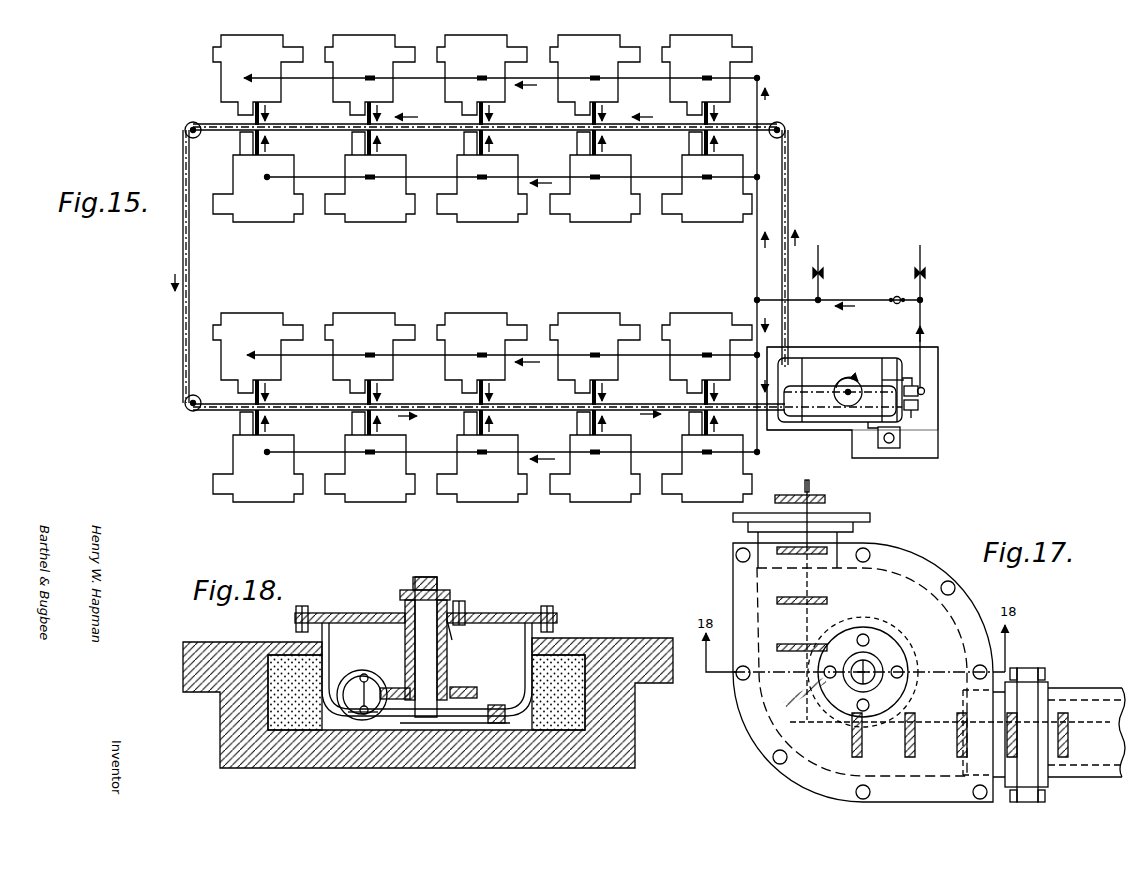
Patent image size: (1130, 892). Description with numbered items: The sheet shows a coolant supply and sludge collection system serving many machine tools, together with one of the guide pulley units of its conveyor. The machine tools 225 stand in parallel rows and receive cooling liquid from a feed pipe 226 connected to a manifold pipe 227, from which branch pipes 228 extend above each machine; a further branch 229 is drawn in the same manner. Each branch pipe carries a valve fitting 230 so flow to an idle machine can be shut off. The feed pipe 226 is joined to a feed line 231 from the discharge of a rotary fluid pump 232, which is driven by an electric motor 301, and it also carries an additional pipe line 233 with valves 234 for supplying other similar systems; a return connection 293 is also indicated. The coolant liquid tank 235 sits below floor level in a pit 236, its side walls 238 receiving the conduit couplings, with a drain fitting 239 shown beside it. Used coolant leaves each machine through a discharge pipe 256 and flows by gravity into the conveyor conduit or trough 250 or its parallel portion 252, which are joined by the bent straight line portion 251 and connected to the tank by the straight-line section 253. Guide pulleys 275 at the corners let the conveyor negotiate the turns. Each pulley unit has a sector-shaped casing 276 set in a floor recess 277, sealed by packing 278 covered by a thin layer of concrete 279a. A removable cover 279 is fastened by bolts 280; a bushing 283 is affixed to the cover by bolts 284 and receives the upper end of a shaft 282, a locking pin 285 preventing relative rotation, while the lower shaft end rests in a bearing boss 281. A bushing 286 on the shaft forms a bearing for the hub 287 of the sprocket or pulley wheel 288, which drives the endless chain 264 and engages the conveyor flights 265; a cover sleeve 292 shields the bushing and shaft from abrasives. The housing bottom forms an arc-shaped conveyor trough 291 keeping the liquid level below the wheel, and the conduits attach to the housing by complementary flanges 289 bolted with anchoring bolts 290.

In FIG. 15, the machine tool 225 is at (211, 78).
In FIG. 15, the valve fitting 230 is at (372, 78).
In FIG. 15, the branch pipe 228 is at (645, 80).
In FIG. 15, the drive shaft 229 is at (658, 451).
In FIG. 15, the discharge pipe 256 is at (590, 118).
In FIG. 15, the straight line portion of conveyor conduit 252 is at (318, 131).
In FIG. 15, the conveyor conduit or trough 250 is at (541, 412).
In FIG. 17, the conveyor conduit or trough 250 is at (1088, 688).
In FIG. 15, the straight line portion of conveyor conduit 251 is at (182, 336).
In FIG. 15, the straight-line section 253 is at (789, 186).
In FIG. 15, the guide pulley 275 is at (182, 130).
In FIG. 17, the guide pulley 275 is at (761, 755).
In FIG. 15, the manifold pipe 227 is at (757, 262).
In FIG. 15, the feed pipe 226 is at (875, 299).
In FIG. 15, the additional pipe line 233 is at (818, 252).
In FIG. 15, the valve 234 is at (824, 273).
In FIG. 15, the coolant liquid tank 235 is at (926, 276).
In FIG. 15, the pit 236 is at (938, 442).
In FIG. 15, the feed line 231 is at (938, 363).
In FIG. 15, the side wall of coolant tank 238 is at (843, 358).
In FIG. 18, the side wall of coolant tank 238 is at (645, 640).
In FIG. 15, the drain 239 is at (864, 428).
In FIG. 15, the rotary fluid pump 232 is at (930, 396).
In FIG. 15, the electric motor 301 is at (921, 423).
In FIG. 15, the return line 293 is at (918, 362).
In FIG. 18, the pit lining 278 is at (286, 650).
In FIG. 18, the floor recess 277 is at (592, 660).
In FIG. 18, the sector-shaped casing 276 is at (526, 645).
In FIG. 18, the layer of concrete 279a is at (356, 612).
In FIG. 18, the removable cover 279 is at (567, 637).
In FIG. 17, the removable cover 279 is at (921, 562).
In FIG. 18, the bolt 280 is at (304, 606).
In FIG. 17, the bolt 280 is at (740, 680).
In FIG. 18, the bolt 284 is at (462, 601).
In FIG. 17, the bolt 284 is at (904, 676).
In FIG. 18, the bushing 283 is at (438, 580).
In FIG. 17, the bushing 283 is at (875, 657).
In FIG. 18, the locking pin 285 is at (412, 584).
In FIG. 17, the locking pin 285 is at (827, 601).
In FIG. 18, the cover sleeve 292 is at (450, 621).
In FIG. 18, the bushing 286 is at (450, 673).
In FIG. 18, the hub 287 is at (386, 688).
In FIG. 18, the sprocket or pulley wheel 288 is at (465, 687).
In FIG. 17, the sprocket or pulley wheel 288 is at (872, 625).
In FIG. 18, the conveyor flight 265 is at (360, 688).
In FIG. 17, the conveyor flight 265 is at (787, 492).
In FIG. 18, the conveyor trough 291 is at (383, 720).
In FIG. 18, the endless chain 264 is at (355, 714).
In FIG. 17, the endless chain 264 is at (812, 488).
In FIG. 18, the bearing boss 281 is at (495, 705).
In FIG. 17, the complementary flange 289 is at (870, 517).
In FIG. 17, the anchoring bolt 290 is at (1045, 670).
In FIG. 17, the shaft 282 is at (878, 660).